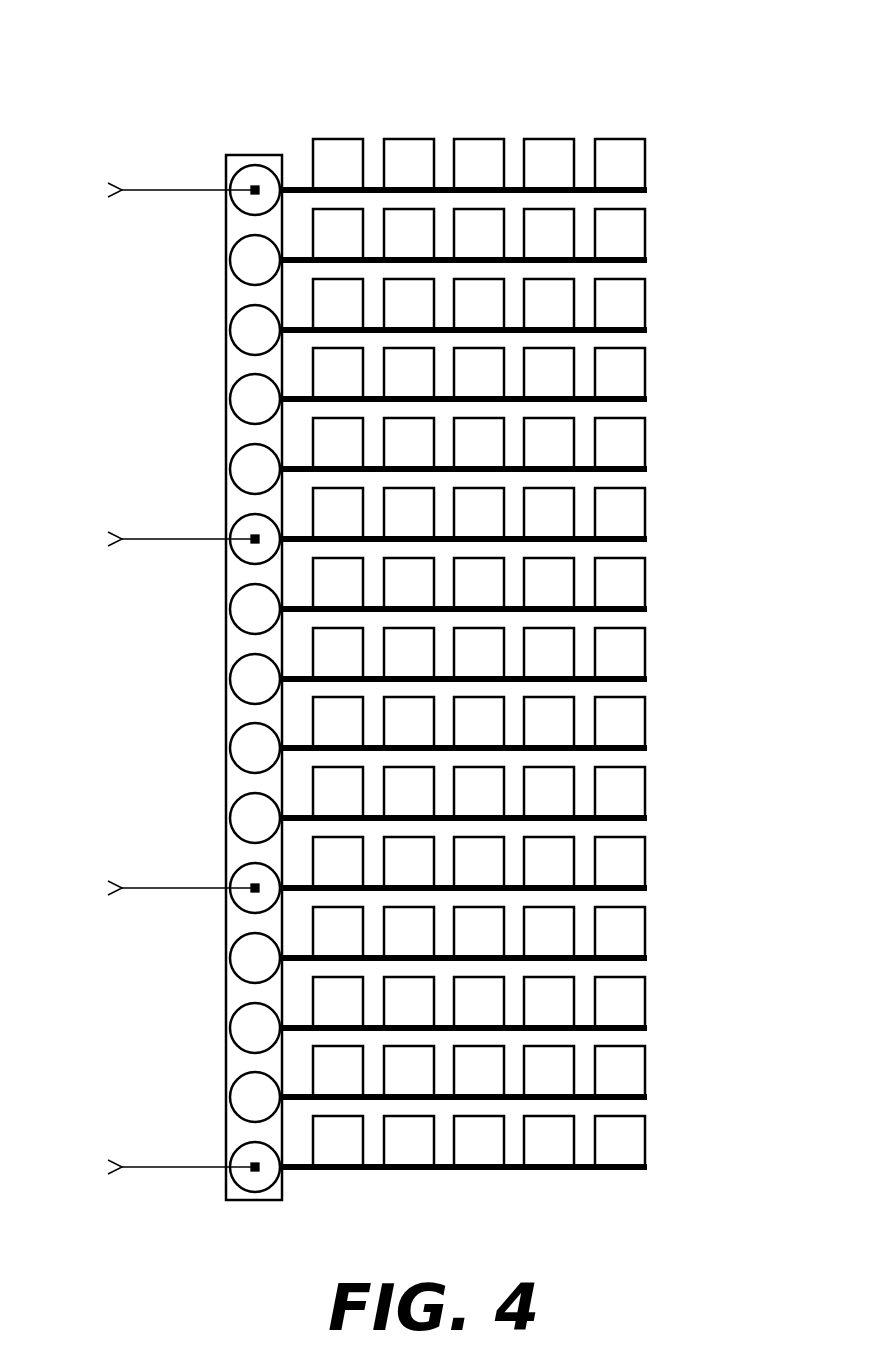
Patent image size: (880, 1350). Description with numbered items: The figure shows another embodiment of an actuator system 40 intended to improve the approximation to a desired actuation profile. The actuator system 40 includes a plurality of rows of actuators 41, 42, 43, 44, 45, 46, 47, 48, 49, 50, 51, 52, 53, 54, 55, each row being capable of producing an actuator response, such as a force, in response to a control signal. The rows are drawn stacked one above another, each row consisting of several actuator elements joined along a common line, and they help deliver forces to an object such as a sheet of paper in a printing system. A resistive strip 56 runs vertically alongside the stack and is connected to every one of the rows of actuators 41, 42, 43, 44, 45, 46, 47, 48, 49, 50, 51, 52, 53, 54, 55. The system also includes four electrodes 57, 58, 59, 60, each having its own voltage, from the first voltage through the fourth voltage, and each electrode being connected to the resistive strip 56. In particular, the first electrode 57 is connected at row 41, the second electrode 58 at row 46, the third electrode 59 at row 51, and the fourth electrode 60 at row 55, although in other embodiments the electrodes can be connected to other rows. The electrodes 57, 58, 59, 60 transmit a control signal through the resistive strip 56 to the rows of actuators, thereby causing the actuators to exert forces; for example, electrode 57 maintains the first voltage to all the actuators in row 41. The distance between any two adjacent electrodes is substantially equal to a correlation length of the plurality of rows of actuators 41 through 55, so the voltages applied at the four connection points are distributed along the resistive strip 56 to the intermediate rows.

The actuator system 40 is at (500, 83).
The row of actuators 41 is at (663, 163).
The row of actuators 42 is at (663, 227).
The row of actuators 43 is at (663, 297).
The row of actuators 44 is at (663, 366).
The row of actuators 45 is at (663, 436).
The row of actuators 46 is at (663, 506).
The row of actuators 47 is at (663, 576).
The row of actuators 48 is at (663, 646).
The row of actuators 49 is at (663, 715).
The row of actuators 50 is at (663, 785).
The row of actuators 51 is at (663, 855).
The row of actuators 52 is at (663, 925).
The row of actuators 53 is at (663, 995).
The row of actuators 54 is at (663, 1064).
The row of actuators 55 is at (663, 1134).
The resistive strip 56 is at (254, 155).
The electrode 57 is at (195, 193).
The electrode 58 is at (195, 543).
The electrode 59 is at (195, 892).
The electrode 60 is at (195, 1171).